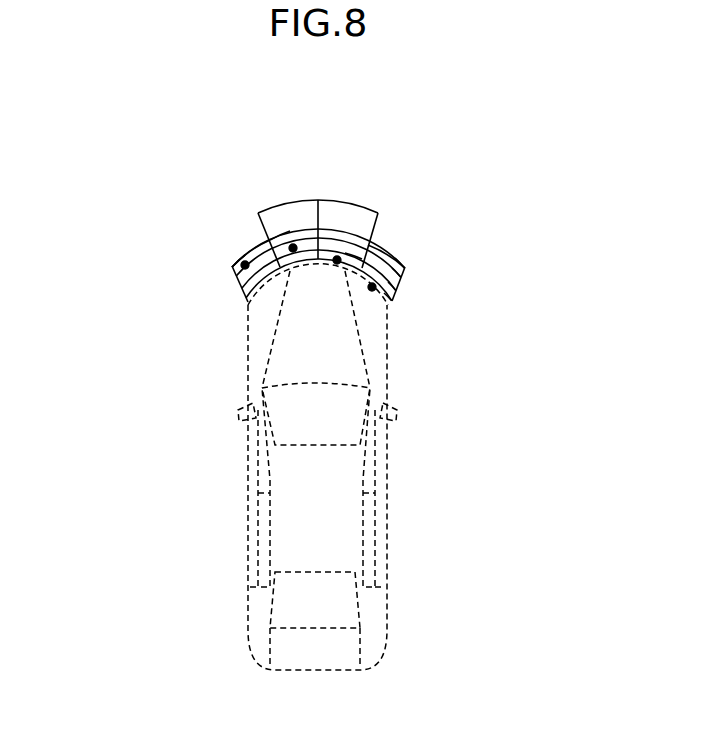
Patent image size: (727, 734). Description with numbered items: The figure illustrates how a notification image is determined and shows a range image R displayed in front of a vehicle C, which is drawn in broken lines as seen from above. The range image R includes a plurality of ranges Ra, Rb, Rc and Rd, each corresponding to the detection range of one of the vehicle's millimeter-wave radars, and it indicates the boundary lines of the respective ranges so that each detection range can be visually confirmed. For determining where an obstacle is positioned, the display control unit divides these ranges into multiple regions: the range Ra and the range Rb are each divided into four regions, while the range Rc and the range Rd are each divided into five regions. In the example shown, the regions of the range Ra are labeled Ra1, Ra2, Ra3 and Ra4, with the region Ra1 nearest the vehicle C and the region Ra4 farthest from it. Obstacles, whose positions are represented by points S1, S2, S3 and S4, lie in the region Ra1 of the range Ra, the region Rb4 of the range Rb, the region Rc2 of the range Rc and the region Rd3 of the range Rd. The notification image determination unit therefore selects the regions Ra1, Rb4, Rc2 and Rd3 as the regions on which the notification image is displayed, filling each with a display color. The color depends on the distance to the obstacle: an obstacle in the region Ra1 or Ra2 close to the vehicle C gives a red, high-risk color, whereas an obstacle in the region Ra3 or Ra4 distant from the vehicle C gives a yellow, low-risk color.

The vehicle C is at (386, 466).
The range image R is at (185, 149).
The range Ra is at (389, 253).
The range Rb is at (255, 248).
The range Rc is at (332, 201).
The range Rd is at (300, 201).
The region Ra1 is at (391, 300).
The region Ra2 is at (395, 295).
The region Ra3 is at (400, 289).
The region Ra4 is at (405, 282).
The region Rb4 is at (235, 282).
The region Rc2 is at (357, 258).
The region Rd3 is at (278, 247).
The point S1 is at (372, 289).
The point S2 is at (337, 262).
The point S3 is at (292, 250).
The point S4 is at (244, 265).